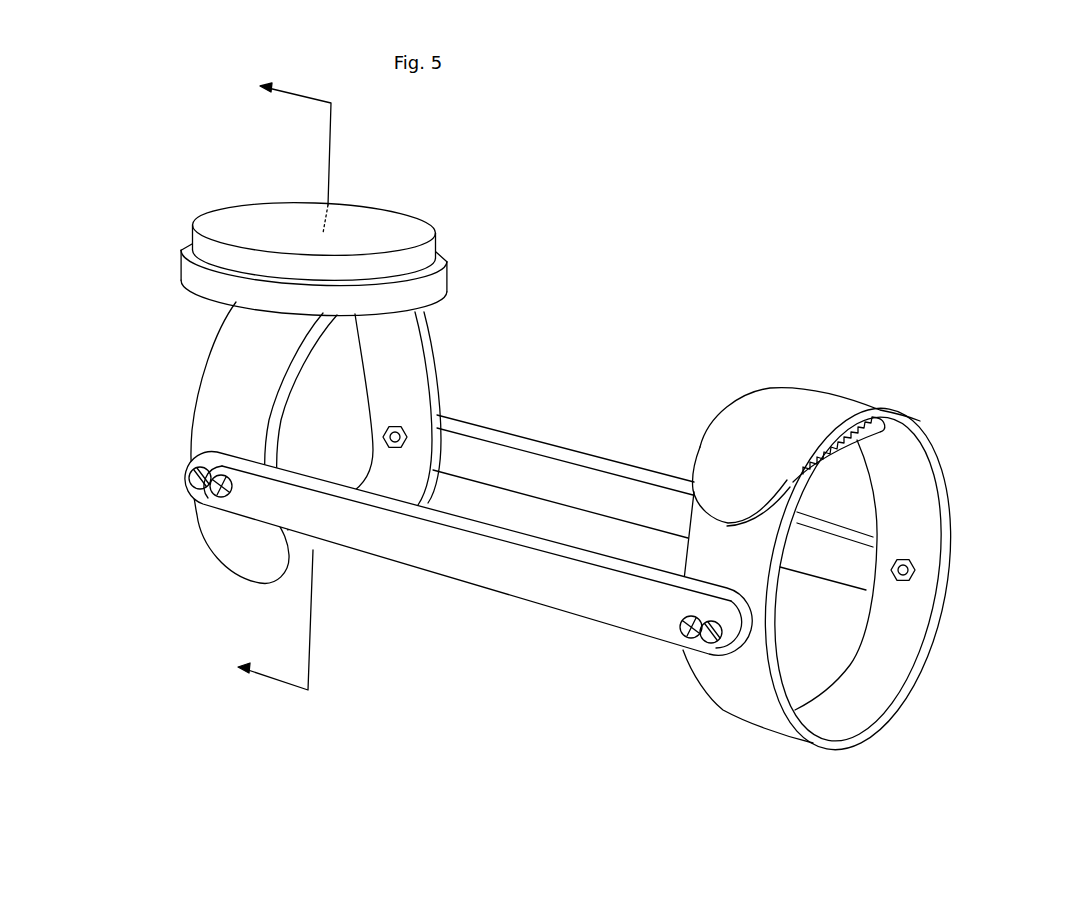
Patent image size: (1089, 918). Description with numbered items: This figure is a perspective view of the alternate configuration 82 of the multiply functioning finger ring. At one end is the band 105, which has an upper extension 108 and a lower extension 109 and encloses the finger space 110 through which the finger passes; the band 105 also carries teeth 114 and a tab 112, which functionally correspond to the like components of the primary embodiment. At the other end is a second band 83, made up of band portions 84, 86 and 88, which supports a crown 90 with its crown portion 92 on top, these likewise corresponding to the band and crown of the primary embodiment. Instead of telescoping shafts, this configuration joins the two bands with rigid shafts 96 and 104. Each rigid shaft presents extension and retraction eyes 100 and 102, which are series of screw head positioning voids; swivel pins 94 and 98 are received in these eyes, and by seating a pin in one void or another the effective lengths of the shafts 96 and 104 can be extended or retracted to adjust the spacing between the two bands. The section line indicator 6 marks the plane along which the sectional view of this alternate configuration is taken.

The section line indicator 6 is at (273, 382).
The alternate configuration 82 is at (587, 470).
The band 83 is at (325, 477).
The band portion 84 is at (240, 334).
The band portion 86 is at (438, 398).
The band portion 88 is at (354, 372).
The crown 90 is at (440, 280).
The crown portion 92 is at (393, 223).
The swivel pin 94 is at (386, 440).
The rigid shaft 96 is at (447, 635).
The swivel pin 98 is at (703, 640).
The extension and retraction eye 100 is at (215, 492).
The extension and retraction eye 102 is at (690, 628).
The rigid shaft 104 is at (515, 467).
The band 105 is at (881, 599).
The upper extension 108 is at (932, 447).
The lower extension 109 is at (858, 730).
The finger space 110 is at (820, 637).
The tab 112 is at (727, 487).
The teeth 114 is at (872, 458).